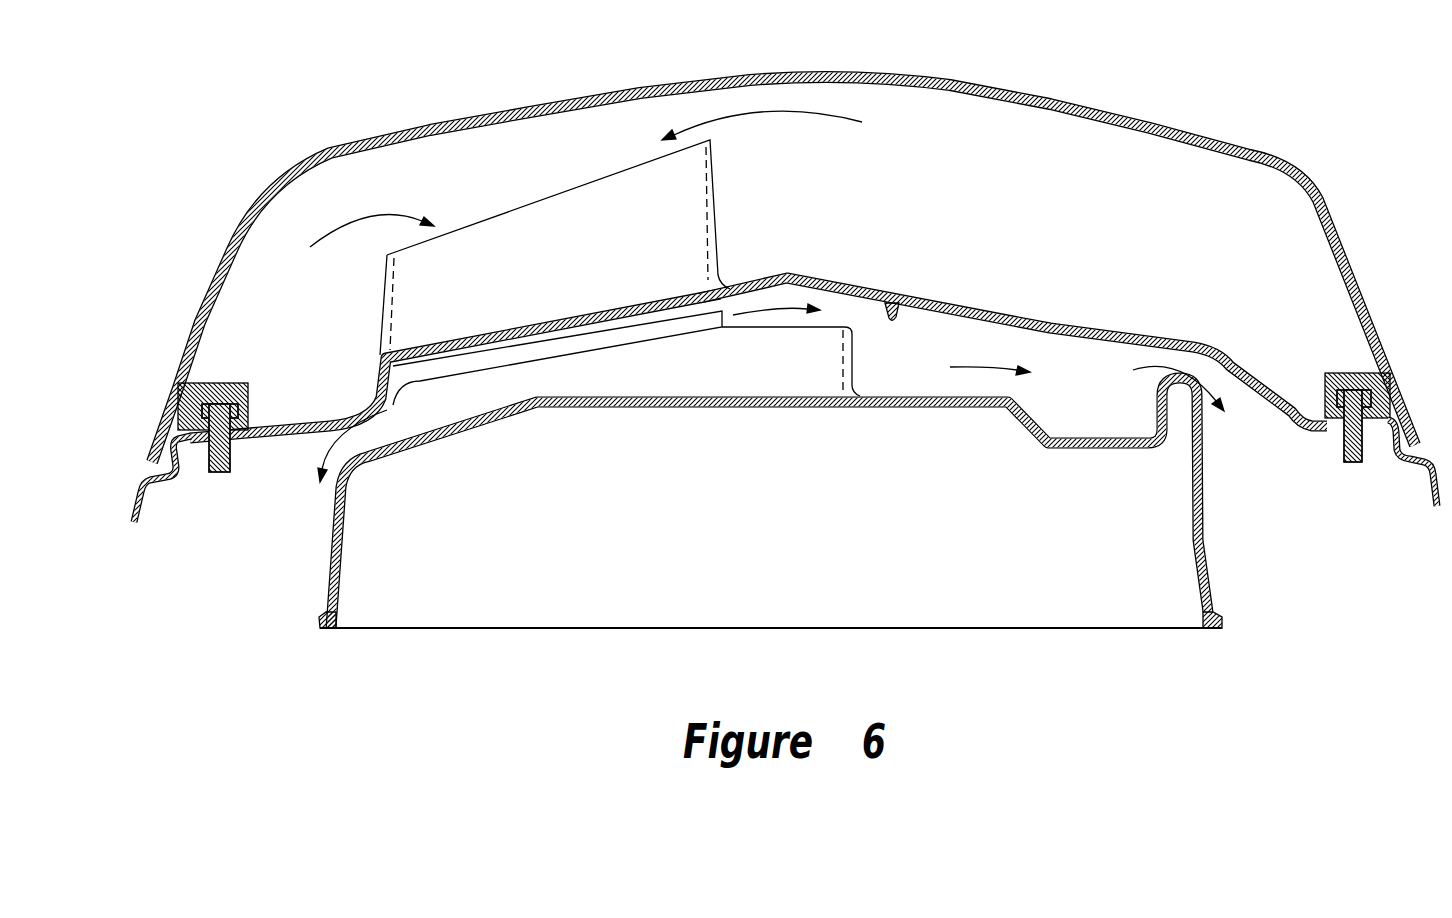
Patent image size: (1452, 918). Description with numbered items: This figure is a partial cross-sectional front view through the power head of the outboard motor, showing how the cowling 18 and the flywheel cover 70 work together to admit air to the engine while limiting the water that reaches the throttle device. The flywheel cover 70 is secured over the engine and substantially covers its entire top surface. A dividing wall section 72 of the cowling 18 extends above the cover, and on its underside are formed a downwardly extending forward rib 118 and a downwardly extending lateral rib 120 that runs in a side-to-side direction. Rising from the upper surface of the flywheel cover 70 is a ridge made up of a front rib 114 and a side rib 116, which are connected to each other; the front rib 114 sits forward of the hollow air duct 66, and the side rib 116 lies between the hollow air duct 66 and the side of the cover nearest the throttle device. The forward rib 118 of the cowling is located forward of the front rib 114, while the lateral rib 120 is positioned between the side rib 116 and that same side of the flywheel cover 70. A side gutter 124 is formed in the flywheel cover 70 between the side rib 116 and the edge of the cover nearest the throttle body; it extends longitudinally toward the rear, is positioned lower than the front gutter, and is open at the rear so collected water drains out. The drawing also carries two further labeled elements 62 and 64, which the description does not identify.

The main cowling portion 18 is at (1428, 487).
The hood outer panel 62 is at (384, 141).
The engine compartment 64 is at (1090, 186).
The hollow air duct 66 is at (695, 220).
The flywheel cover 70 is at (333, 552).
The dividing wall section 72 is at (1073, 320).
The front rib 114 is at (703, 373).
The side rib 116 is at (852, 367).
The forward rib 118 is at (490, 350).
The lateral rib 120 is at (898, 316).
The side gutter 124 is at (1100, 433).